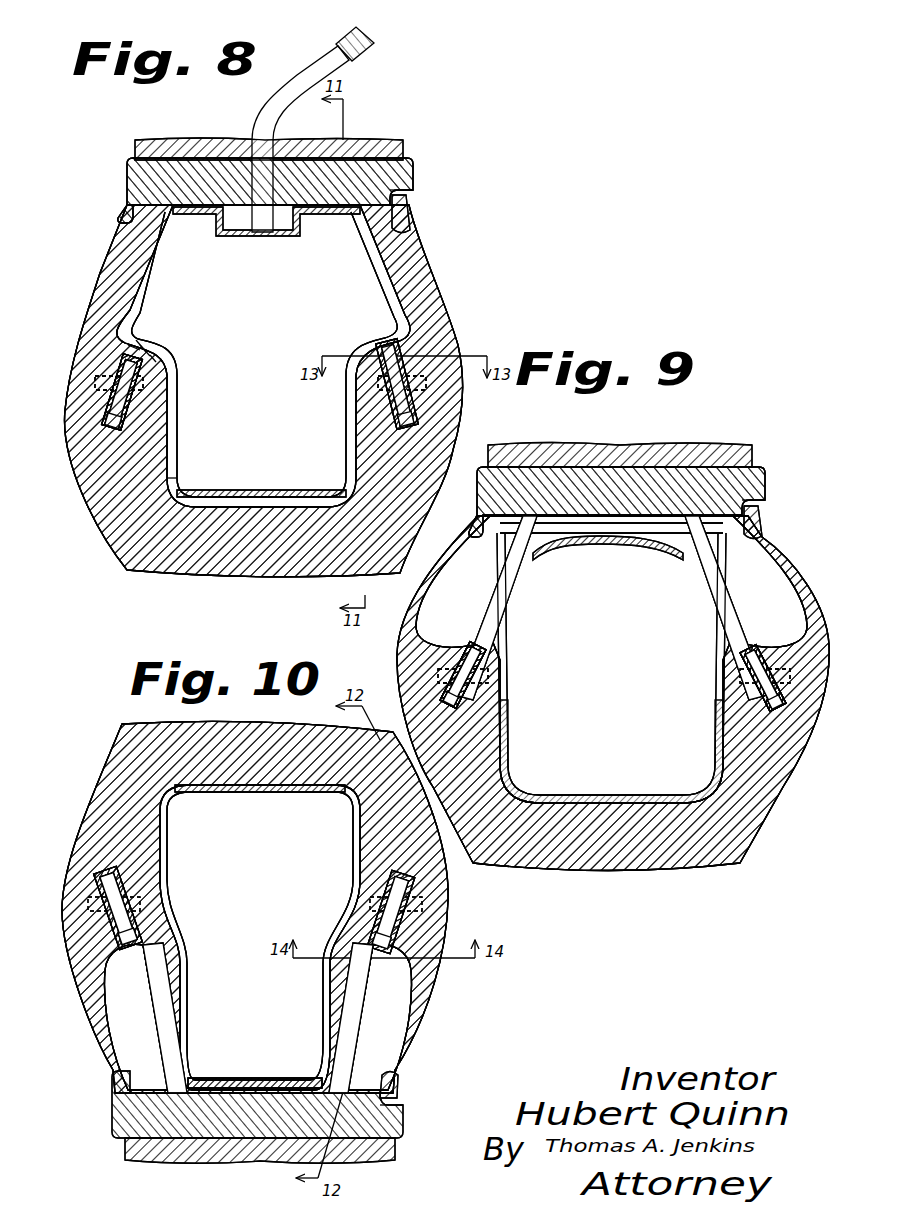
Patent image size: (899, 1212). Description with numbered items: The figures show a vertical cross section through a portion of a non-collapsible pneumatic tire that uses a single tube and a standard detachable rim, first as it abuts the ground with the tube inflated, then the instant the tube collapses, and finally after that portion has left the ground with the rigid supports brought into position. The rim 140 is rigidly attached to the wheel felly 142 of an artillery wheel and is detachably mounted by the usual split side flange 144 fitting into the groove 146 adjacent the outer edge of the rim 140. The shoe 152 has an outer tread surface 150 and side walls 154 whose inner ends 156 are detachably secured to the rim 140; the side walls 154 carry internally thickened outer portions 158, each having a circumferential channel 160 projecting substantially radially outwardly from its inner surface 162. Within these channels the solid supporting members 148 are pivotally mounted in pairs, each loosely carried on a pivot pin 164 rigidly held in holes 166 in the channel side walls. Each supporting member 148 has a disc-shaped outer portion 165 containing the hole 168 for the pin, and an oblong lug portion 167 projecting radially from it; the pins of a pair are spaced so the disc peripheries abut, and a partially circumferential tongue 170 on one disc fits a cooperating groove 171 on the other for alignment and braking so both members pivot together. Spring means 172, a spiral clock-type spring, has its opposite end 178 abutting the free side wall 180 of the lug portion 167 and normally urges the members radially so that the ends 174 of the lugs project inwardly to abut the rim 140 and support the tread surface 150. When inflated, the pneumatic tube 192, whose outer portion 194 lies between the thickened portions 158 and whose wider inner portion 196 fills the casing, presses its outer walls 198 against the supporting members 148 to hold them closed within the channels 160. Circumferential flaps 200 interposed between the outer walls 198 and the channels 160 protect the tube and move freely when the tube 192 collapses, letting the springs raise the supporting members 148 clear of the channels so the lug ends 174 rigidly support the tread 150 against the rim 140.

In FIG. 8, the rim 140 is at (413, 178).
In FIG. 9, the rim 140 is at (600, 468).
In FIG. 10, the rim 140 is at (130, 1110).
In FIG. 8, the wheel felly 142 is at (380, 148).
In FIG. 9, the wheel felly 142 is at (672, 453).
In FIG. 10, the wheel felly 142 is at (145, 1150).
In FIG. 8, the split side flange 144 is at (410, 214).
In FIG. 9, the split side flange 144 is at (762, 530).
In FIG. 10, the split side flange 144 is at (396, 1073).
In FIG. 8, the groove 146 is at (405, 196).
In FIG. 9, the groove 146 is at (752, 500).
In FIG. 10, the groove 146 is at (400, 1100).
In FIG. 8, the supporting member 148 is at (140, 372).
In FIG. 9, the supporting member 148 is at (520, 580).
In FIG. 10, the supporting member 148 is at (150, 972).
In FIG. 8, the tread surface 150 is at (250, 573).
In FIG. 9, the tread surface 150 is at (645, 868).
In FIG. 10, the tread surface 150 is at (148, 722).
In FIG. 8, the shoe 152 is at (105, 500).
In FIG. 9, the shoe 152 is at (780, 790).
In FIG. 10, the shoe 152 is at (100, 790).
In FIG. 8, the side walls 154 is at (80, 440).
In FIG. 9, the side walls 154 is at (820, 600).
In FIG. 10, the side walls 154 is at (80, 853).
In FIG. 8, the inner ends 156 is at (148, 205).
In FIG. 9, the inner ends 156 is at (755, 470).
In FIG. 8, the thickened outer portions 158 is at (137, 400).
In FIG. 10, the thickened outer portions 158 is at (140, 915).
In FIG. 8, the circumferential channel 160 is at (118, 418).
In FIG. 9, the circumferential channel 160 is at (466, 712).
In FIG. 10, the circumferential channel 160 is at (122, 885).
In FIG. 8, the inner surface 162 is at (142, 346).
In FIG. 8, the pivot pin 164 is at (110, 370).
In FIG. 9, the pivot pin 164 is at (470, 680).
In FIG. 10, the pivot pin 164 is at (155, 895).
In FIG. 8, the outer portion 165 is at (110, 383).
In FIG. 9, the outer portion 165 is at (482, 668).
In FIG. 8, the holes 166 is at (130, 383).
In FIG. 9, the holes 166 is at (482, 695).
In FIG. 9, the lug portion 167 is at (690, 535).
In FIG. 10, the lug portion 167 is at (185, 1050).
In FIG. 8, the hole 168 is at (108, 440).
In FIG. 9, the hole 168 is at (482, 655).
In FIG. 9, the partially circumferential tongue 170 is at (506, 730).
In FIG. 9, the partially circumferential groove 171 is at (472, 705).
In FIG. 8, the spring means 172 is at (152, 356).
In FIG. 10, the spring means 172 is at (150, 930).
In FIG. 9, the ends 174 is at (690, 524).
In FIG. 10, the ends 174 is at (195, 1077).
In FIG. 8, the opposite end 178 is at (160, 480).
In FIG. 9, the opposite end 178 is at (500, 660).
In FIG. 8, the free side wall 180 is at (172, 500).
In FIG. 9, the free side wall 180 is at (500, 640).
In FIG. 8, the pneumatic tube 192 is at (353, 233).
In FIG. 9, the pneumatic tube 192 is at (650, 556).
In FIG. 10, the pneumatic tube 192 is at (302, 800).
In FIG. 8, the outer portion 194 is at (172, 462).
In FIG. 10, the outer portion 194 is at (166, 835).
In FIG. 8, the inner portion 196 is at (158, 268).
In FIG. 10, the inner portion 196 is at (172, 980).
In FIG. 8, the outer walls 198 is at (130, 344).
In FIG. 8, the circumferential flaps 200 is at (137, 342).
In FIG. 9, the circumferential flaps 200 is at (505, 620).
In FIG. 10, the circumferential flaps 200 is at (165, 1000).